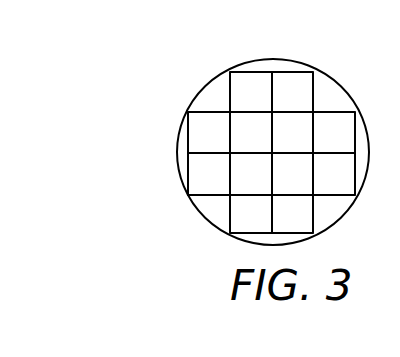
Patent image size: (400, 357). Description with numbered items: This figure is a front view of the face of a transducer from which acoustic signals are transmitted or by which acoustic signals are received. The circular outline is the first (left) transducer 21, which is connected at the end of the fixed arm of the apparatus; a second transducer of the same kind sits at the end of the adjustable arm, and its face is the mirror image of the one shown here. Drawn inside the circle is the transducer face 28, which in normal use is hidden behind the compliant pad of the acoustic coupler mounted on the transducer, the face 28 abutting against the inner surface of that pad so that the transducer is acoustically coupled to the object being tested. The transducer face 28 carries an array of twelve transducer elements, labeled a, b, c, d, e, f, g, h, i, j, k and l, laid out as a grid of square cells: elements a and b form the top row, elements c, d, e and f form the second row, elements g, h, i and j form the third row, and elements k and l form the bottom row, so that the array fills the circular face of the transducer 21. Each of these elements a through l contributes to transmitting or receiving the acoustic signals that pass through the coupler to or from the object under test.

The transducer 21 is at (290, 62).
The transducer face 28 is at (229, 142).
The transducer element a is at (250, 107).
The transducer element b is at (291, 107).
The transducer element c is at (205, 147).
The transducer element d is at (249, 147).
The transducer element e is at (292, 147).
The transducer element f is at (328, 147).
The transducer element g is at (205, 188).
The transducer element h is at (247, 188).
The transducer element i is at (286, 188).
The transducer element j is at (326, 188).
The transducer element k is at (245, 229).
The transducer element l is at (284, 229).